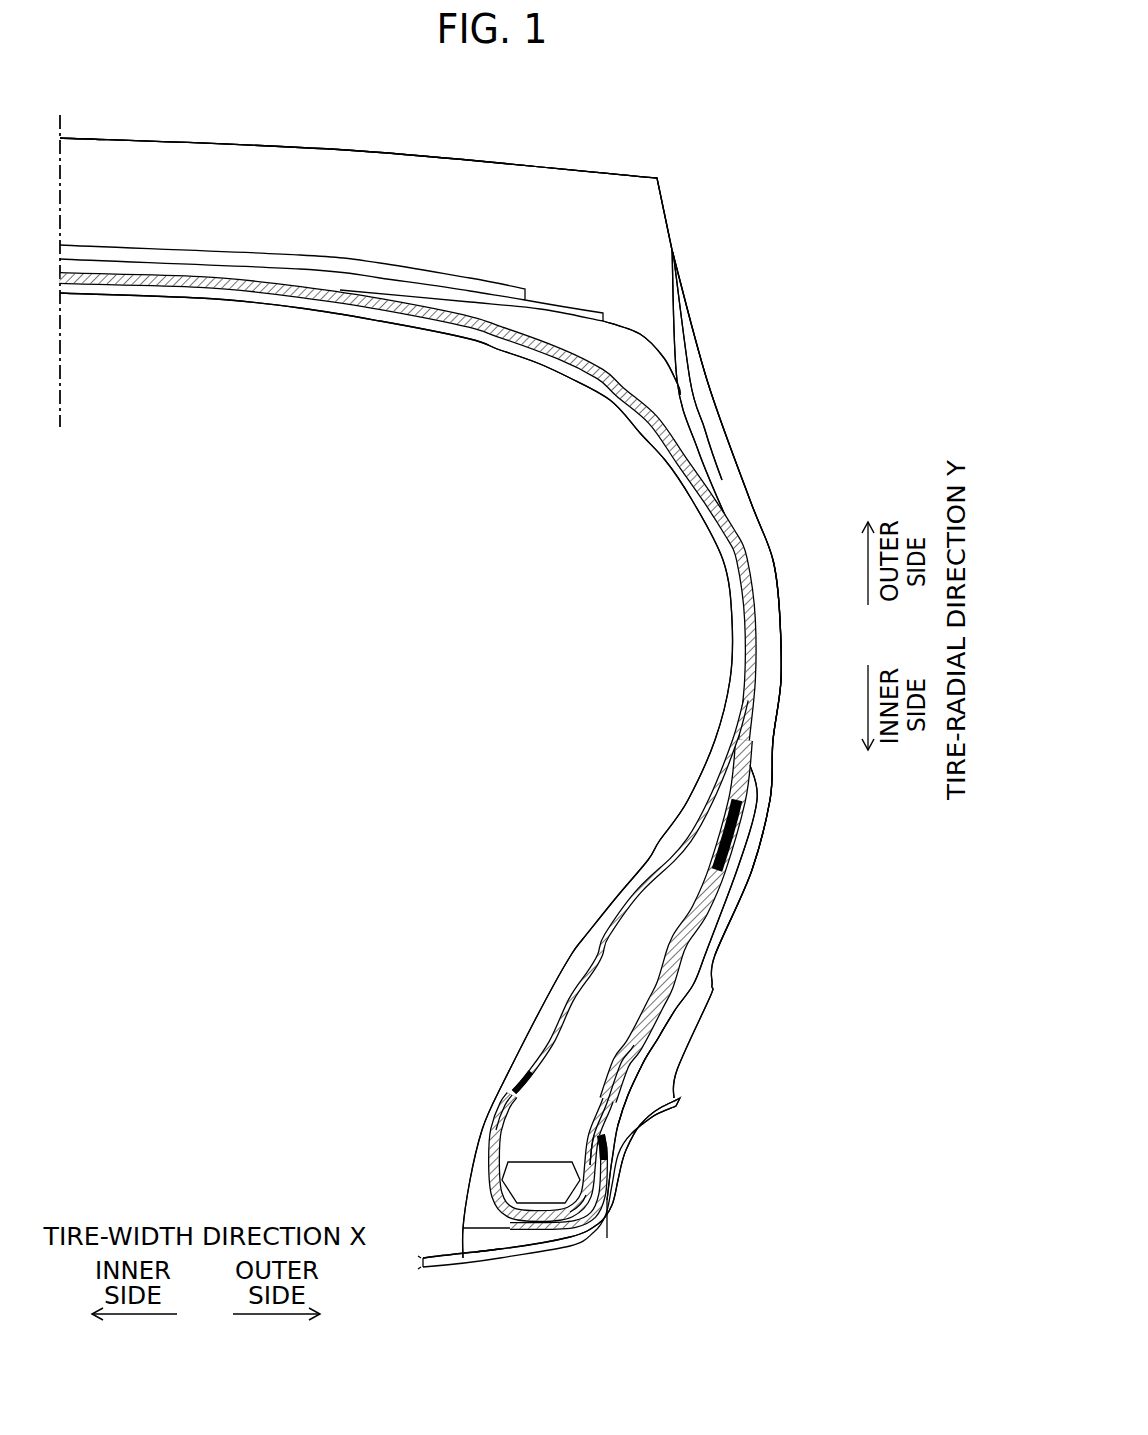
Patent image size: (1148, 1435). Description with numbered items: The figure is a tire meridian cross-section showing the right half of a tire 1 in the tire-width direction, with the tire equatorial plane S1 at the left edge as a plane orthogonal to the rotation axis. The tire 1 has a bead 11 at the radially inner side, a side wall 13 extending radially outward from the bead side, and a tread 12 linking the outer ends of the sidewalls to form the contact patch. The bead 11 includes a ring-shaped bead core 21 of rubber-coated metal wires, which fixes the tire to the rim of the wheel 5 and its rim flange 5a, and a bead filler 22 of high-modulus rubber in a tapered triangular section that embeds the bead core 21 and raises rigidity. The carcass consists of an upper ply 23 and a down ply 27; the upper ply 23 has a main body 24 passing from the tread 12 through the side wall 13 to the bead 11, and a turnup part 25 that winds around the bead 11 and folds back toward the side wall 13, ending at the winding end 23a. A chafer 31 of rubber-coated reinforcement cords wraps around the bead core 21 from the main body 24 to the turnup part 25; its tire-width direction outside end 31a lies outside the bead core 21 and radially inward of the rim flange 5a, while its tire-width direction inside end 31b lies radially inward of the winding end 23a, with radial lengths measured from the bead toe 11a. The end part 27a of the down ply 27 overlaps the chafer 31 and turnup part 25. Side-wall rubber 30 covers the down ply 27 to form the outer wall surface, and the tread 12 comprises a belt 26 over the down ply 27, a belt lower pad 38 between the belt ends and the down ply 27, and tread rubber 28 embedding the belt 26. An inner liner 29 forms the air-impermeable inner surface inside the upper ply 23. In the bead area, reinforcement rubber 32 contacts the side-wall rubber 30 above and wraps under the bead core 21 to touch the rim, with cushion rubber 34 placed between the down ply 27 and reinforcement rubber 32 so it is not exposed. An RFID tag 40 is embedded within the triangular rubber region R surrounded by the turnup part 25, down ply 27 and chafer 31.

The tire 1 is at (785, 120).
The wheel 5 is at (612, 1228).
The rim flange 5a is at (672, 1110).
The bead 11 is at (692, 1077).
The bead toe 11a is at (453, 1257).
The tread 12 is at (472, 138).
The side wall 13 is at (758, 478).
The bead core 21 is at (520, 1193).
The bead filler 22 is at (532, 1128).
The upper ply 23 is at (668, 435).
The winding end 23a is at (726, 812).
The main body 24 is at (678, 453).
The turnup part 25 is at (590, 1157).
The belt 26 is at (152, 265).
The down ply 27 is at (732, 828).
The end part 27a is at (598, 1240).
The tread rubber 28 is at (590, 190).
The inner liner 29 is at (737, 645).
The side-wall rubber 30 is at (765, 777).
The chafer 31 is at (565, 1222).
The tire-width direction outside end 31a is at (600, 1122).
The tire-width direction inside end 31b is at (515, 1090).
The reinforcement rubber 32 is at (487, 1247).
The cushion rubber 34 is at (662, 1022).
The belt lower pad 38 is at (648, 377).
The RFID tag 40 is at (600, 1112).
The region R is at (607, 1065).
The tire equatorial plane S1 is at (62, 410).